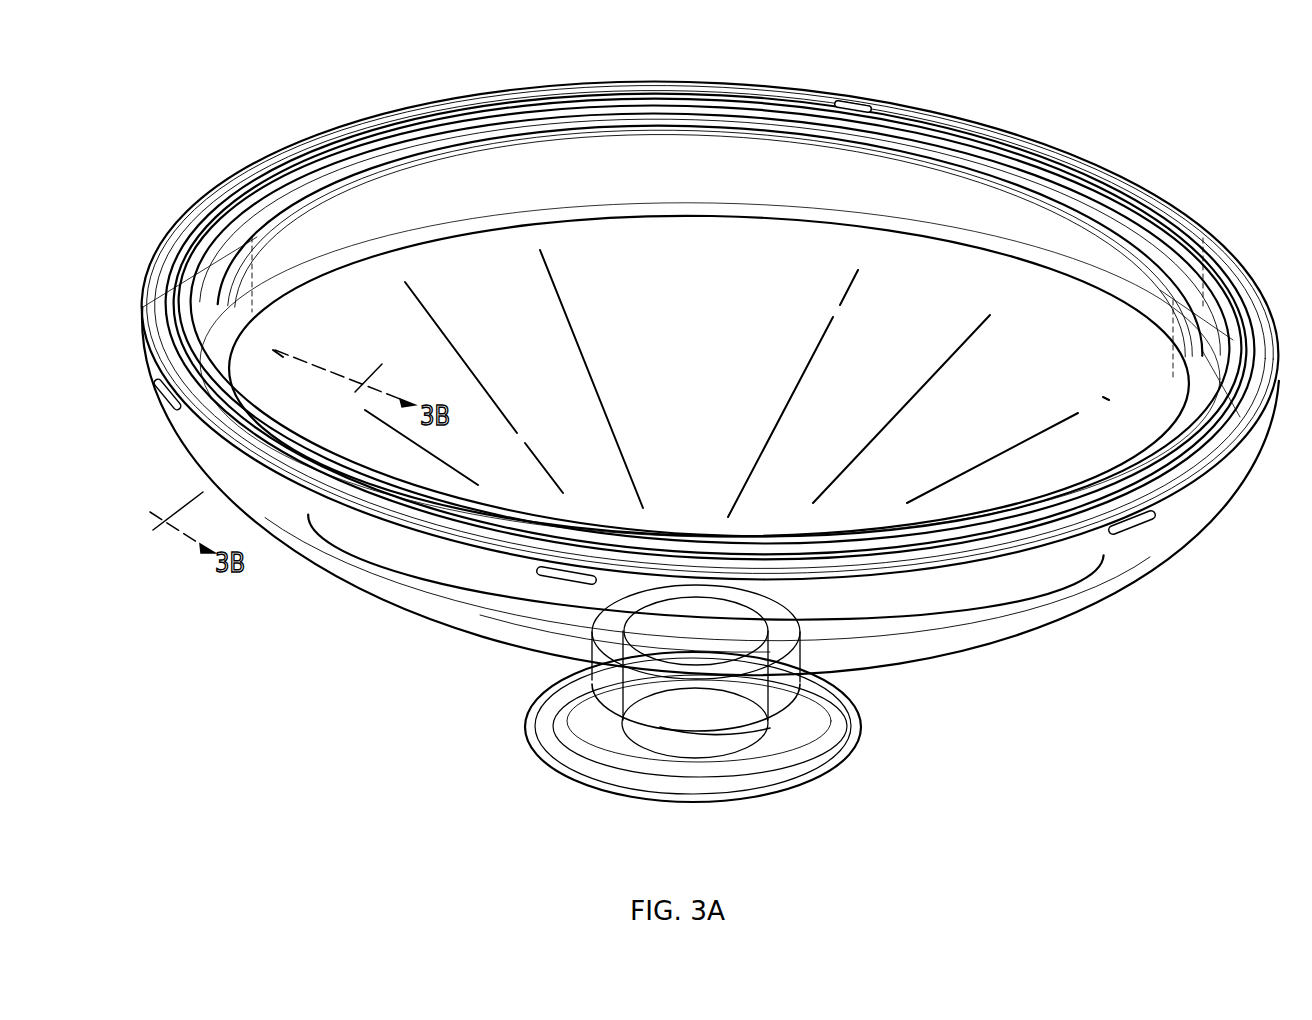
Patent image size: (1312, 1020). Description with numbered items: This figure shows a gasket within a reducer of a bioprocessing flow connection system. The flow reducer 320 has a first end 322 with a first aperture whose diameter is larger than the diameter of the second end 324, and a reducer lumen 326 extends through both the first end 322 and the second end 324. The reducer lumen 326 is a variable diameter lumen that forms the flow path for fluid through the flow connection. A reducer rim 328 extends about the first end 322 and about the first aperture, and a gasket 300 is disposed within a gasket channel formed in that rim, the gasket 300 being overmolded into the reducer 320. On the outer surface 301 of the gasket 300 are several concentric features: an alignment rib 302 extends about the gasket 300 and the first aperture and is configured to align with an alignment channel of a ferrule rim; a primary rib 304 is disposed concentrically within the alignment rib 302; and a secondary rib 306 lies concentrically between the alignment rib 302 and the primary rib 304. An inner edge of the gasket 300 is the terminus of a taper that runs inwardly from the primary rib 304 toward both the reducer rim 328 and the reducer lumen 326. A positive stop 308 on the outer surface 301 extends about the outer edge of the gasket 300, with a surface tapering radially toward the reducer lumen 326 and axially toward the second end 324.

The gasket 300 is at (377, 147).
The outer surface 301 is at (192, 240).
The alignment rib 302 is at (1235, 268).
The primary rib 304 is at (1178, 300).
The secondary rib 306 is at (1202, 268).
The positive stop 308 is at (157, 287).
The flow reducer 320 is at (383, 600).
The first end 322 is at (622, 84).
The second end 324 is at (546, 757).
The reducer lumen 326 is at (728, 257).
The reducer rim 328 is at (702, 120).